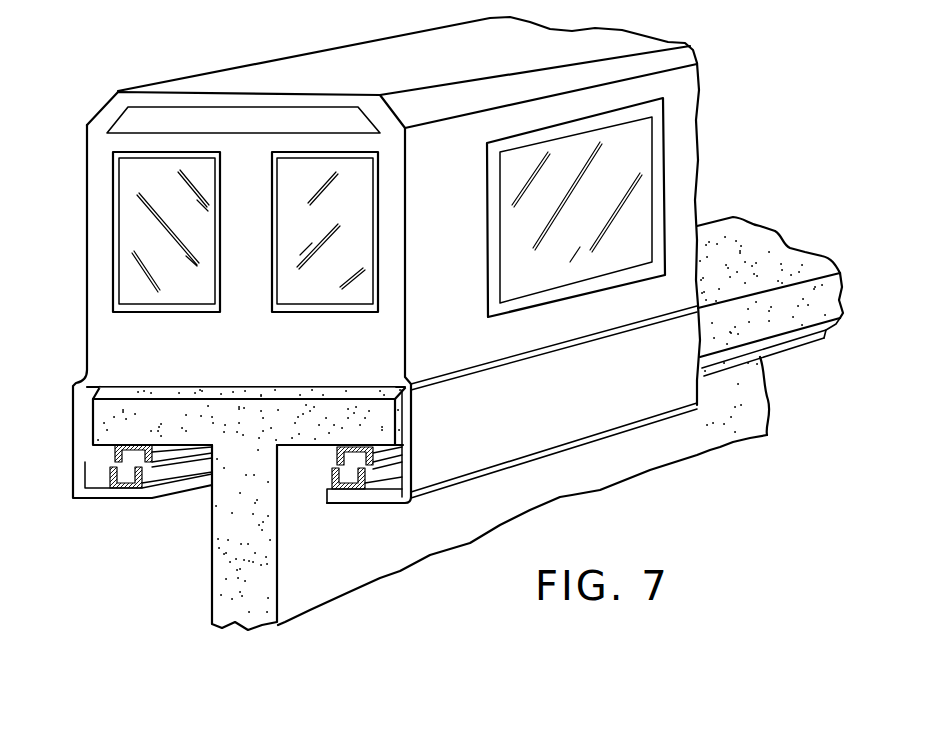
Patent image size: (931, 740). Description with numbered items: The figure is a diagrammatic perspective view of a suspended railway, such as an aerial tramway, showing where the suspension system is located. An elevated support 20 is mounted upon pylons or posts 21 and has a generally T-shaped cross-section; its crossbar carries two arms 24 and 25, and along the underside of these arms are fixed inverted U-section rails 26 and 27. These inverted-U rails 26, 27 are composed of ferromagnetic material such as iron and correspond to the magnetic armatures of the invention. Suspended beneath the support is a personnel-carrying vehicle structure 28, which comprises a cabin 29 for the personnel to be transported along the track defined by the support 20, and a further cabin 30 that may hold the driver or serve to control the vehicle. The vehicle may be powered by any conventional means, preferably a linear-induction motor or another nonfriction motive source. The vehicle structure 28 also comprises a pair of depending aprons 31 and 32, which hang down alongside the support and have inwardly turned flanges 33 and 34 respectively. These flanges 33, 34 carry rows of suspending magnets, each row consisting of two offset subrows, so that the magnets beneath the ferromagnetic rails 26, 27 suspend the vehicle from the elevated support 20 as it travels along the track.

The elevated support 20 is at (722, 218).
The pylons or posts 21 is at (222, 581).
The arm 24 is at (100, 409).
The arm 25 is at (372, 424).
The inverted U-section rail 26 is at (337, 470).
The inverted U-section rail 27 is at (115, 459).
The vehicle structure 28 is at (712, 96).
The cabin 29 is at (562, 275).
The cabin 30 is at (123, 250).
The depending apron 31 is at (405, 472).
The depending apron 32 is at (78, 482).
The inwardly turned flange 33 is at (343, 500).
The inwardly turned flange 34 is at (128, 493).